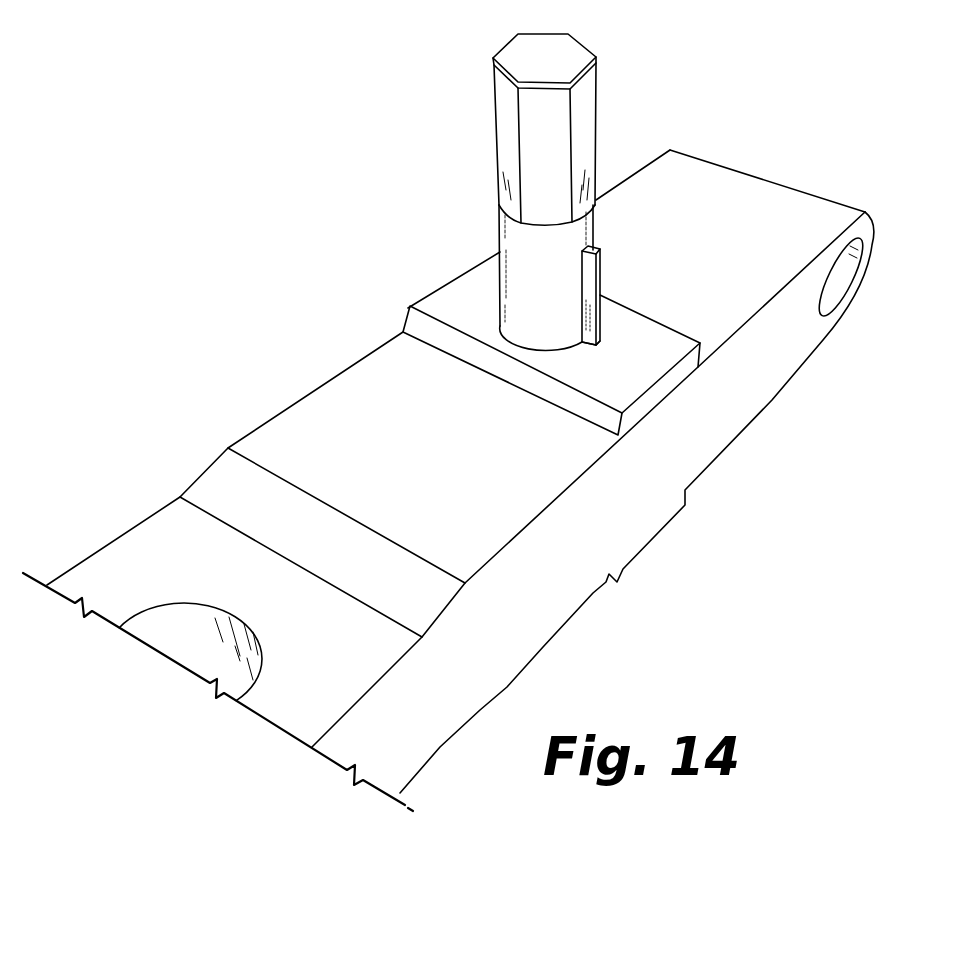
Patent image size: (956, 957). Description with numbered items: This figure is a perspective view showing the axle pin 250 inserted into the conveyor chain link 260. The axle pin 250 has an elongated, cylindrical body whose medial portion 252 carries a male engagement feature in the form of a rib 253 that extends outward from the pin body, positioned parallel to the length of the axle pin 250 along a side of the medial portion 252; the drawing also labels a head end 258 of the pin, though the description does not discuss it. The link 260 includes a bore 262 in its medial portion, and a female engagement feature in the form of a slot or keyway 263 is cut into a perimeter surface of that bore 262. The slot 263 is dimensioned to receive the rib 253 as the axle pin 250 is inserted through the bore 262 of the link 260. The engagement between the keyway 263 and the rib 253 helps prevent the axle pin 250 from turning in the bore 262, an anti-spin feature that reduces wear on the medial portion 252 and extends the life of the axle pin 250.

The axle pin 250 is at (541, 189).
The medial portion 252 is at (498, 233).
The rib 253 is at (590, 275).
The hexagonal head 258 is at (582, 112).
The link 260 is at (785, 160).
The bore 262 is at (500, 320).
The slot 263 is at (588, 345).